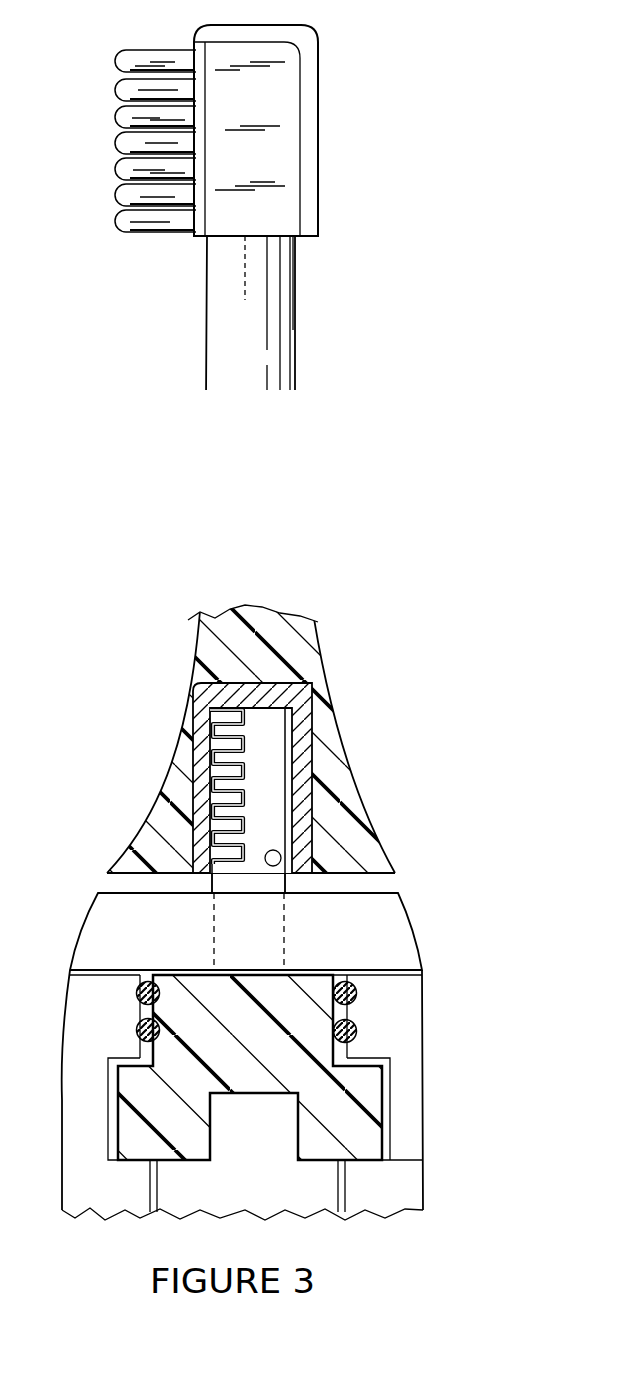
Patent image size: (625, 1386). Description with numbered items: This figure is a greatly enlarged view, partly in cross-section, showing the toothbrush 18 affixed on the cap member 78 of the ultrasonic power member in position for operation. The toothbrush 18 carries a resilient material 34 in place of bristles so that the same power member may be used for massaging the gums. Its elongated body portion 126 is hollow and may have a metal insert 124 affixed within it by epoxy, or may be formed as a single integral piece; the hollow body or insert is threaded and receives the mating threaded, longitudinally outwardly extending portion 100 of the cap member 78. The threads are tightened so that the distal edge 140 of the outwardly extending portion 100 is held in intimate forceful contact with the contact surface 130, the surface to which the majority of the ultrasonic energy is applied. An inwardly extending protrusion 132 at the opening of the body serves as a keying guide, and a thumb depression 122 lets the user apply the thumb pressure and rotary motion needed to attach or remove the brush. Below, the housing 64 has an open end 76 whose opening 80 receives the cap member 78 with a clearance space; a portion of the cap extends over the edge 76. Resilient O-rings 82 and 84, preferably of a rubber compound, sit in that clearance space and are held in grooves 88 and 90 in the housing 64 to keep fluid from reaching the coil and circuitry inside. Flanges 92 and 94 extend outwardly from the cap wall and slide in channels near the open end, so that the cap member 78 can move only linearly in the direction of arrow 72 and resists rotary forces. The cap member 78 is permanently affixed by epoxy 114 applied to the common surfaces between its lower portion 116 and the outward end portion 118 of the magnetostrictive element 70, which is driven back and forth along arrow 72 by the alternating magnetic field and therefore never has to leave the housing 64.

The toothbrush 18 is at (287, 298).
The resilient material 34 is at (148, 50).
The housing 64 is at (423, 1055).
The magnetostrictive element 70 is at (263, 1199).
The arrow 72 is at (248, 460).
The open end 76 is at (415, 982).
The cap member 78 is at (385, 920).
The opening 80 is at (353, 970).
The O-ring 82 is at (137, 990).
The O-ring 84 is at (137, 1032).
The groove 88 is at (355, 1003).
The groove 90 is at (358, 1033).
The flange 92 is at (377, 1077).
The flange 94 is at (125, 1140).
The longitudinally outwardly extending portion 100 is at (275, 720).
The epoxy 114 is at (175, 1165).
The lower portion 116 is at (248, 1083).
The outward end portion 118 is at (262, 1140).
The thumb depression 122 is at (256, 530).
The metal insert 124 is at (305, 748).
The elongated body portion 126 is at (293, 590).
The contact surface 130 is at (215, 683).
The protrusion 132 is at (281, 856).
The distal edge 140 is at (212, 712).